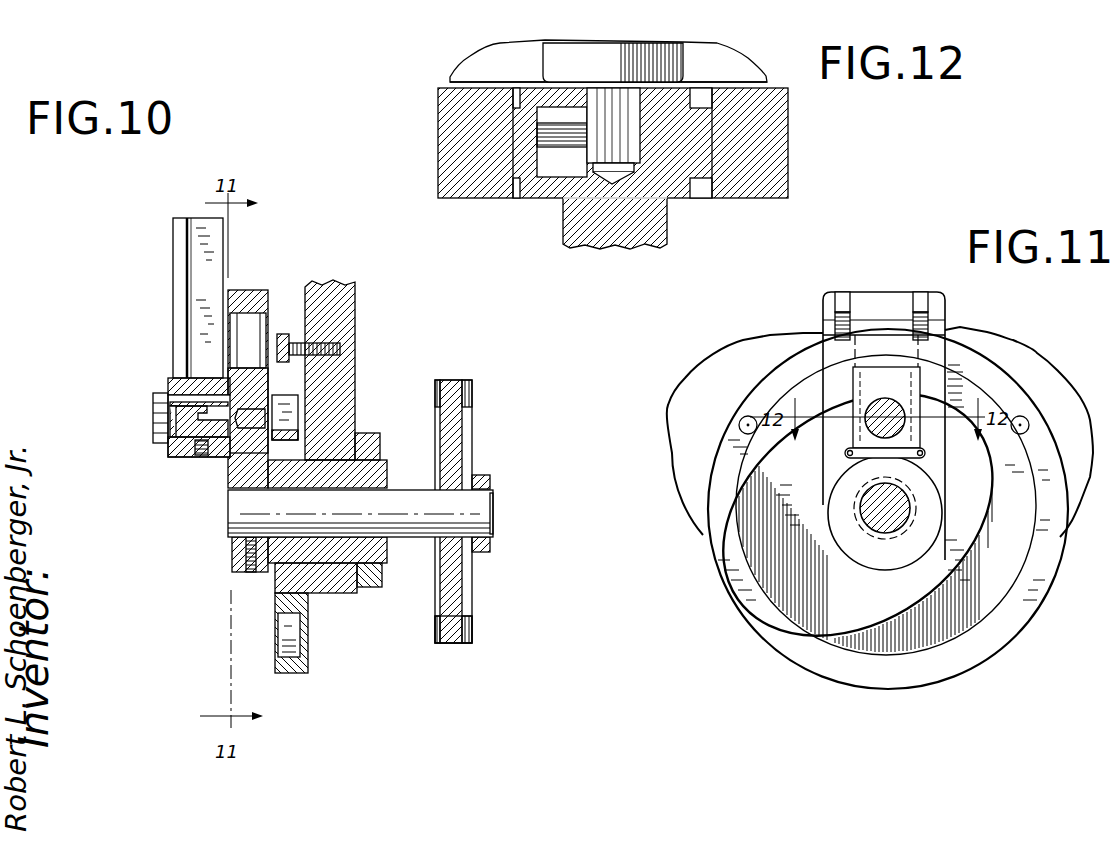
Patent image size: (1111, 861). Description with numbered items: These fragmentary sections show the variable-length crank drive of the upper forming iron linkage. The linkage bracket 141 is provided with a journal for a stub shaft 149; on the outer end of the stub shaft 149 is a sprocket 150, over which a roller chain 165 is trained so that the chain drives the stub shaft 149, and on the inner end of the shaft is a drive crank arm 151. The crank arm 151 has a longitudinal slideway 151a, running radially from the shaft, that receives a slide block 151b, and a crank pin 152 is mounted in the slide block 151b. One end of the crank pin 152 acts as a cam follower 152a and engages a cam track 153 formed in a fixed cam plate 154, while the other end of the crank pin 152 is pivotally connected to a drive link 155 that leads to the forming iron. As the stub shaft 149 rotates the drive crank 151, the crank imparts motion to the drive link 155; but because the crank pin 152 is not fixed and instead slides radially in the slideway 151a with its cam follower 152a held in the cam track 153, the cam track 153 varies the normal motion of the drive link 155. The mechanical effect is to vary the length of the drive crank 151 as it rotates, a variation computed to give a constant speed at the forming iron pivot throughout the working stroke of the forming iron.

In FIG. 10, the linkage bracket 141 is at (345, 297).
In FIG. 11, the linkage bracket 141 is at (683, 418).
In FIG. 10, the stub shaft 149 is at (493, 513).
In FIG. 11, the stub shaft 149 is at (886, 533).
In FIG. 10, the sprocket 150 is at (460, 441).
In FIG. 10, the drive crank arm 151 is at (250, 292).
In FIG. 12, the drive crank arm 151 is at (790, 150).
In FIG. 11, the drive crank arm 151 is at (823, 336).
In FIG. 10, the slideway 151a is at (234, 327).
In FIG. 12, the slideway 151a is at (708, 198).
In FIG. 11, the slideway 151a is at (850, 333).
In FIG. 10, the slide block 151b is at (232, 370).
In FIG. 12, the slide block 151b is at (551, 197).
In FIG. 11, the slide block 151b is at (867, 377).
In FIG. 10, the crank pin 152 is at (192, 427).
In FIG. 12, the crank pin 152 is at (567, 243).
In FIG. 11, the crank pin 152 is at (863, 426).
In FIG. 10, the cam follower 152a is at (292, 409).
In FIG. 12, the cam follower 152a is at (564, 44).
In FIG. 10, the cam track 153 is at (308, 652).
In FIG. 12, the cam track 153 is at (478, 62).
In FIG. 11, the cam track 153 is at (923, 640).
In FIG. 10, the fixed cam plate 154 is at (306, 628).
In FIG. 12, the fixed cam plate 154 is at (450, 81).
In FIG. 11, the fixed cam plate 154 is at (1003, 630).
In FIG. 10, the drive link 155 is at (182, 273).
In FIG. 10, the roller chain 165 is at (470, 641).